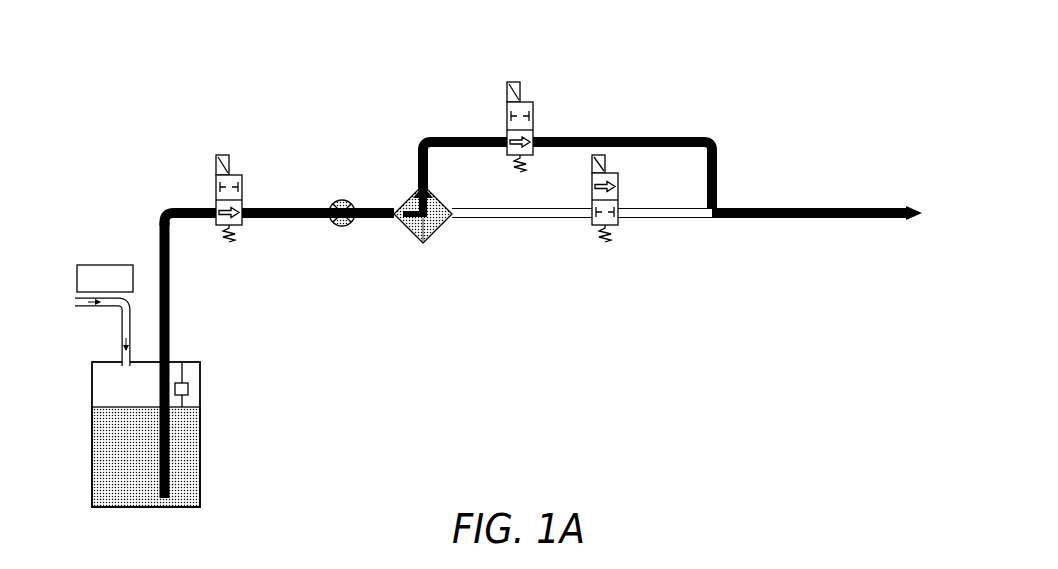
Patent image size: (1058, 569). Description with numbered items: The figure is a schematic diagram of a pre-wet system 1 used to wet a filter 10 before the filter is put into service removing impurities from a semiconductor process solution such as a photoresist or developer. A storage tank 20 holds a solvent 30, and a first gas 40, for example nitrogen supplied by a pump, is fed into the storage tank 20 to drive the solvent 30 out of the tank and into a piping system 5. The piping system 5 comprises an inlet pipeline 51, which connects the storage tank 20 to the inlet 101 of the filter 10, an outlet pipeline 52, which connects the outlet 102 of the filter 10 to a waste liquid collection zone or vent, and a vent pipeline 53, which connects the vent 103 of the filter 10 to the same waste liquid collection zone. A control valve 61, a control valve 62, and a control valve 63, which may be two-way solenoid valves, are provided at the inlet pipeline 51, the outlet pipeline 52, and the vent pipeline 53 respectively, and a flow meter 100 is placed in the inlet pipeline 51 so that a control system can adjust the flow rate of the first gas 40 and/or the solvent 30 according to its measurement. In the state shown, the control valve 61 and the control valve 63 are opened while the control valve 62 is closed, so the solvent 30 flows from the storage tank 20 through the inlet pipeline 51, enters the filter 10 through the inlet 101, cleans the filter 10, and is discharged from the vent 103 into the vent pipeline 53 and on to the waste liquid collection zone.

The pre-wet system 1 is at (908, 49).
The piping system 5 is at (188, 317).
The filter 10 is at (425, 214).
The storage tank 20 is at (200, 473).
The solvent 30 is at (188, 428).
The first gas 40 is at (106, 308).
The inlet pipeline 51 is at (162, 215).
The outlet pipeline 52 is at (563, 219).
The vent pipeline 53 is at (660, 137).
The control valve 61 is at (232, 172).
The control valve 62 is at (607, 173).
The control valve 63 is at (525, 100).
The flow meter 100 is at (342, 198).
The inlet 101 is at (390, 215).
The outlet 102 is at (450, 214).
The vent 103 is at (413, 187).